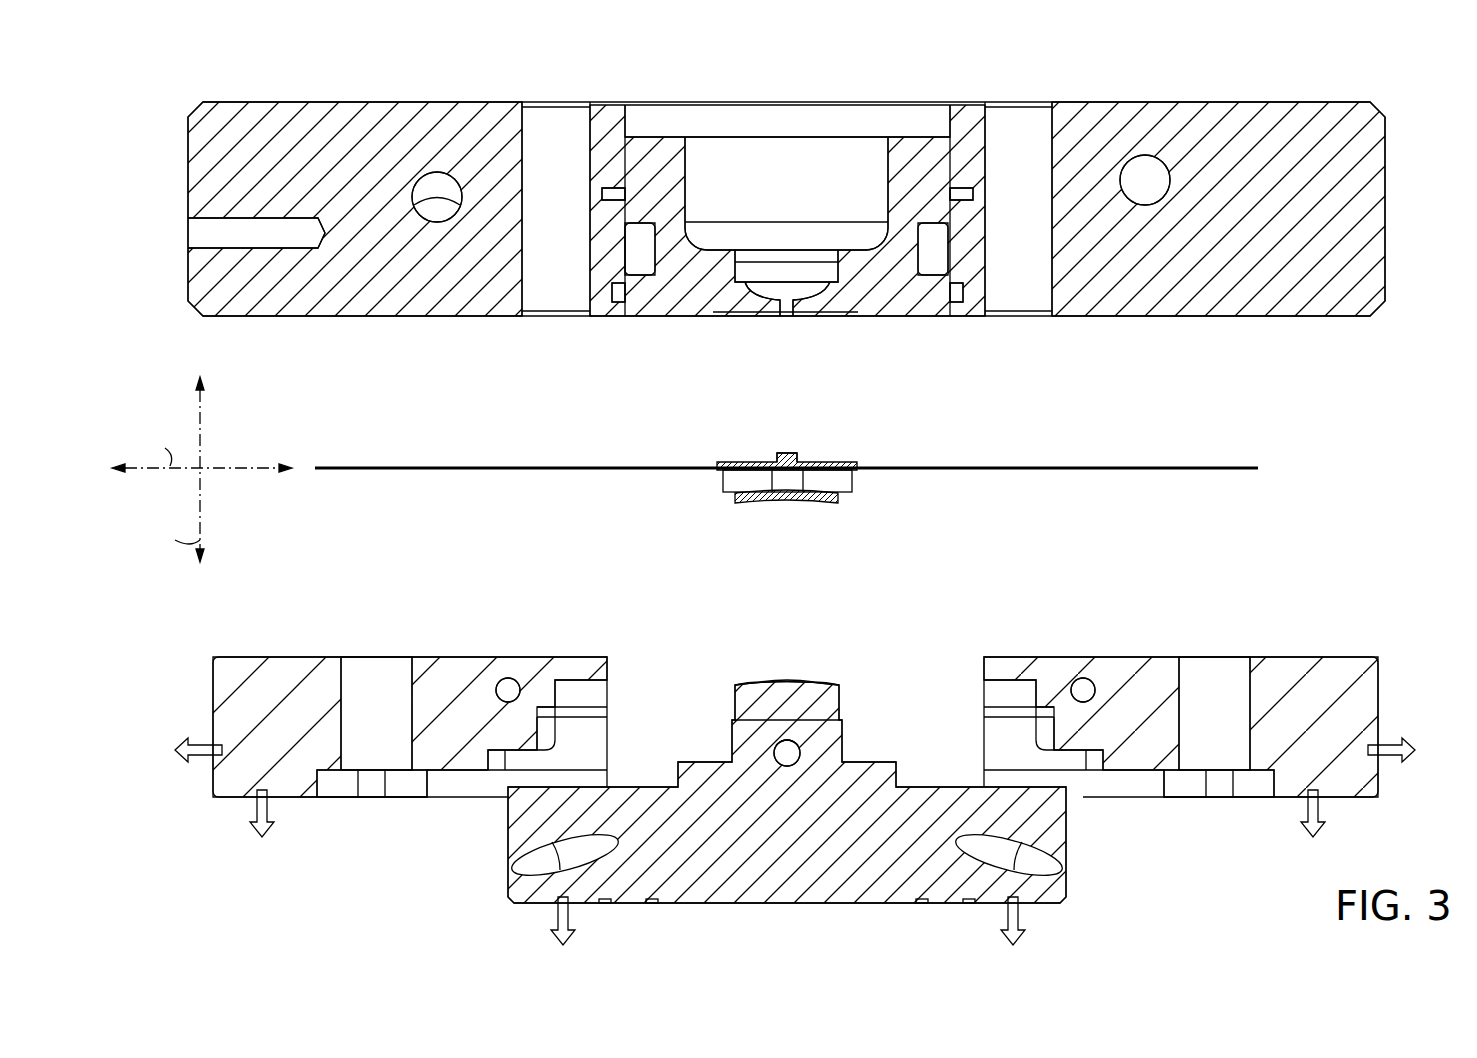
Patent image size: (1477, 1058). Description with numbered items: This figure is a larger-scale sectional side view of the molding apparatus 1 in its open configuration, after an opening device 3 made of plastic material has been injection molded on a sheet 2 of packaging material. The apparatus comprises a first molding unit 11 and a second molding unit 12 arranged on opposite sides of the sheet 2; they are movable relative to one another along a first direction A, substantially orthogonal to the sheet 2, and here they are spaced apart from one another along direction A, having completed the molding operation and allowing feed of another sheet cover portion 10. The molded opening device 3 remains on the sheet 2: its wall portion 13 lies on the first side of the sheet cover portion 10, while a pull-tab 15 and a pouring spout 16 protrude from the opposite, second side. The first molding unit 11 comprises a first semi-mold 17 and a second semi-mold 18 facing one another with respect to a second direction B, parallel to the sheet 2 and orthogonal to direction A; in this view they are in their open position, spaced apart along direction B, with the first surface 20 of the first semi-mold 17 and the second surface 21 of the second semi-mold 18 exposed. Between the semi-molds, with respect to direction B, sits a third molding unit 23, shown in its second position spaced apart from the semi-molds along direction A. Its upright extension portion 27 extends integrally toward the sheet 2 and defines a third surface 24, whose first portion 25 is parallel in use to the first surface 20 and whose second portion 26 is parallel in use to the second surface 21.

The molding apparatus 1 is at (831, 186).
The sheet 2 is at (1218, 465).
The opening device 3 is at (801, 465).
The sheet cover portion 10 is at (740, 464).
The first molding unit 11 is at (817, 770).
The second molding unit 12 is at (1412, 243).
The wall portion 13 is at (800, 466).
The pull-tab 15 is at (820, 499).
The pouring spout 16 is at (855, 480).
The first semi-mold 17 is at (1181, 697).
The second semi-mold 18 is at (445, 699).
The first surface 20 is at (1043, 725).
The second surface 21 is at (580, 683).
The third molding unit 23 is at (787, 749).
The third surface 24 is at (797, 682).
The first portion 25 is at (823, 683).
The second portion 26 is at (750, 683).
The upright extension portion 27 is at (818, 705).
The first direction A is at (175, 540).
The second direction B is at (165, 448).